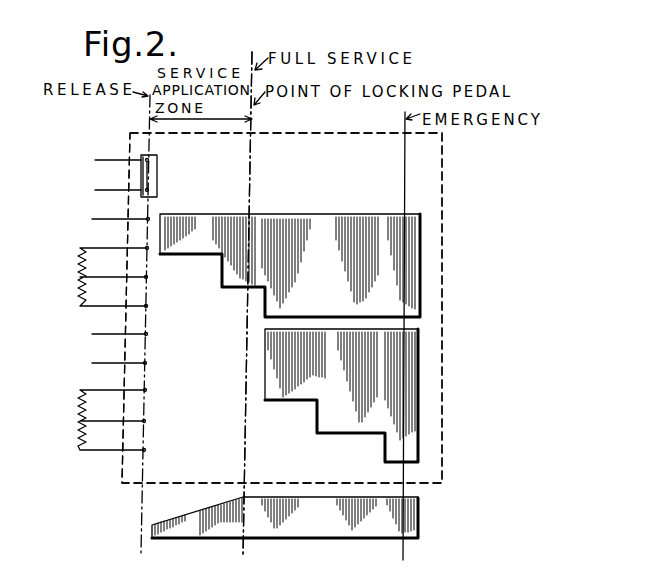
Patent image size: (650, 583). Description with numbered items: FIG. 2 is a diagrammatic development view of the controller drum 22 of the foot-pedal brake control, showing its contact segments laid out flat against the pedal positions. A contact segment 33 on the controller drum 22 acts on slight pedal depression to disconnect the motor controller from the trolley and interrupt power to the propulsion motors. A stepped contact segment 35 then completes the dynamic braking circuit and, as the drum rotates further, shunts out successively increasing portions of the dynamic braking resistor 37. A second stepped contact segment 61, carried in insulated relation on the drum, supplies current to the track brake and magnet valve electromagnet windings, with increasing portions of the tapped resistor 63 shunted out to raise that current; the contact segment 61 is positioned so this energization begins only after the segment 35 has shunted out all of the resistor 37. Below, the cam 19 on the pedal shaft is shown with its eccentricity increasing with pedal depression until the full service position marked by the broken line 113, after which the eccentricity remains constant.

The broken line 113 is at (246, 57).
The controller drum 22 is at (448, 171).
The contact segment 33 is at (141, 175).
The dynamic braking resistor 37 is at (78, 262).
The resistor 63 is at (78, 404).
The stepped contact segment 35 is at (410, 250).
The stepped contact segment 61 is at (410, 372).
The cam 19 is at (413, 525).